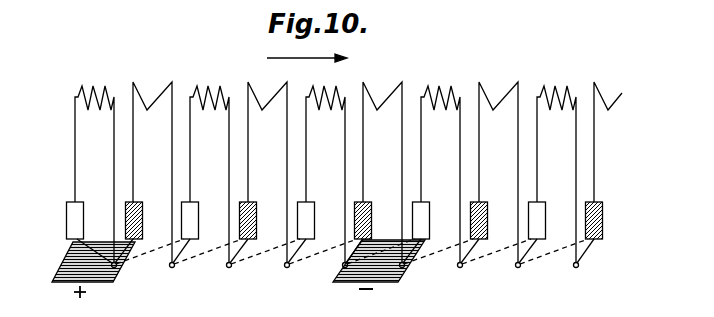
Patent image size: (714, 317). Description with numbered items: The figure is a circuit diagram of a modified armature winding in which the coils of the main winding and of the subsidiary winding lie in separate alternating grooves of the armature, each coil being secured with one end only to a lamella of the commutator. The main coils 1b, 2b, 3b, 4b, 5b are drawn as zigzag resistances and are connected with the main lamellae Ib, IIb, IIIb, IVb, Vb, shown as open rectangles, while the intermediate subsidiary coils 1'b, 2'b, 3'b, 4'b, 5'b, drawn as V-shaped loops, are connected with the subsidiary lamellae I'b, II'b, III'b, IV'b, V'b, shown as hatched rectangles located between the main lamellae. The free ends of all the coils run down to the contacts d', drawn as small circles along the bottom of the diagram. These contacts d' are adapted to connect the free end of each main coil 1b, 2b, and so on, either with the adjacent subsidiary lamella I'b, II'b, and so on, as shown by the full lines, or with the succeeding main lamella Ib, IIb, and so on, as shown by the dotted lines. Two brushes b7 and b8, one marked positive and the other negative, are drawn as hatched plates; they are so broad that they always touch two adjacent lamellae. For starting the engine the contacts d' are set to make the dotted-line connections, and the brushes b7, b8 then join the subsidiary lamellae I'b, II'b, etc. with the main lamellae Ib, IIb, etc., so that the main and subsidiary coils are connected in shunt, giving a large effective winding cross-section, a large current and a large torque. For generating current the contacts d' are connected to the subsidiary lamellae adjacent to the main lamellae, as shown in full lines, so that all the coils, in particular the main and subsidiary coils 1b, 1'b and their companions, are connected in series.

The main coil 1b is at (94, 162).
The subsidiary coil 1'b is at (152, 172).
The main coil 2b is at (209, 162).
The subsidiary coil 2'b is at (267, 172).
The main coil 3b is at (325, 162).
The subsidiary coil 3'b is at (382, 172).
The main coil 4b is at (440, 162).
The subsidiary coil 4'b is at (498, 172).
The main coil 5b is at (556, 162).
The subsidiary coil 5'b is at (610, 142).
The main lamella Ib is at (84, 225).
The subsidiary lamella I'b is at (145, 220).
The main lamella IIb is at (199, 222).
The subsidiary lamella II'b is at (263, 220).
The main lamella IIIb is at (315, 222).
The subsidiary lamella III'b is at (378, 220).
The main lamella IVb is at (430, 222).
The subsidiary lamella IV'b is at (494, 220).
The main lamella Vb is at (546, 222).
The subsidiary lamella V'b is at (608, 220).
The brush b7 is at (70, 267).
The brush b8 is at (342, 272).
The contact d' is at (345, 277).